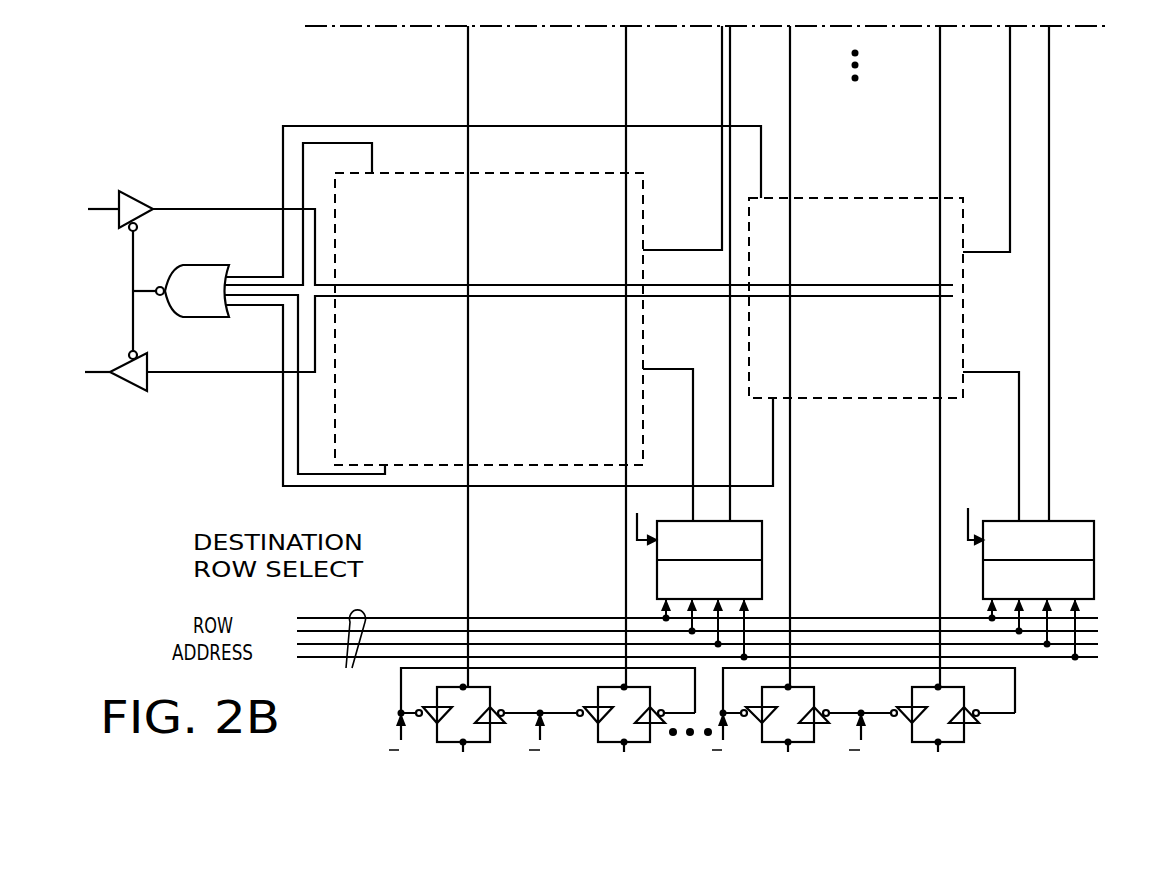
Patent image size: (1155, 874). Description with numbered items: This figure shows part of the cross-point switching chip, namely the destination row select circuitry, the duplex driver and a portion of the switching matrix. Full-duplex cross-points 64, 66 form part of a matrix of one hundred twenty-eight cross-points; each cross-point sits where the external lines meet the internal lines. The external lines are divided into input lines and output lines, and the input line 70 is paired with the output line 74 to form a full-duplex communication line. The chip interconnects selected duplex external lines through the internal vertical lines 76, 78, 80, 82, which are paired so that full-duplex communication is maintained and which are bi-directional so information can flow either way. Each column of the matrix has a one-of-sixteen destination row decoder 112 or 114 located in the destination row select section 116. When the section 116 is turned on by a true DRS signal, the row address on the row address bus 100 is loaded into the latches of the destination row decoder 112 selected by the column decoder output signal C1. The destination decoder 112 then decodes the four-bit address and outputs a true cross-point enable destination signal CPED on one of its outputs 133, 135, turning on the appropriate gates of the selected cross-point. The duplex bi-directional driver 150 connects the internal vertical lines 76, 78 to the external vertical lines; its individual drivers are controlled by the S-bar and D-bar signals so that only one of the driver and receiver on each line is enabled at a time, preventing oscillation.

The full-duplex cross-point 64 is at (548, 173).
The full-duplex cross-point 66 is at (858, 197).
The input line 70 is at (103, 207).
The output line 74 is at (93, 370).
The internal vertical line 76 is at (469, 88).
The internal vertical line 78 is at (627, 88).
The internal vertical line 80 is at (791, 93).
The internal vertical line 82 is at (941, 93).
The row address bus 100 is at (697, 653).
The destination row decoder 112 is at (738, 521).
The destination row decoder 114 is at (1075, 520).
The destination row select section 116 is at (594, 581).
The destination row decoder output 133 is at (693, 467).
The destination row decoder output 135 is at (730, 357).
The duplex bi-directional driver 150 is at (362, 744).